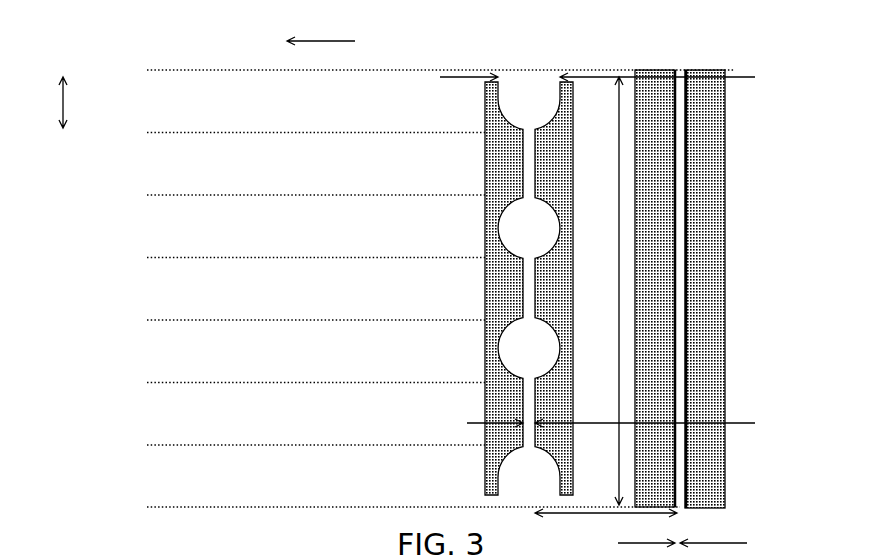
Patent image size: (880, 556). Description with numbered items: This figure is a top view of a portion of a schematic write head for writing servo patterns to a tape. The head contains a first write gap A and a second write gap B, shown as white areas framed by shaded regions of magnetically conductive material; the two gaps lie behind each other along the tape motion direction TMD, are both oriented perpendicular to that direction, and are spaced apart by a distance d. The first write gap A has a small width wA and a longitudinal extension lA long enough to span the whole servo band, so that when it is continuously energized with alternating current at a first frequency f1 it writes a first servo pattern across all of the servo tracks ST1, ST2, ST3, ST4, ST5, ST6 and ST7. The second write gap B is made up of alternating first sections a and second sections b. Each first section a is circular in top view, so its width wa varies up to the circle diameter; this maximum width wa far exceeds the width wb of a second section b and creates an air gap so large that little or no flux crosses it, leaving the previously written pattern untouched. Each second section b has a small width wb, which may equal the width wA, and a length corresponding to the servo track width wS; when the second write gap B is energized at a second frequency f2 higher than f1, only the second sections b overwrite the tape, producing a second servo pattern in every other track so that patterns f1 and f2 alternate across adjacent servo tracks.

The second write gap B is at (529, 265).
The first write gap A is at (680, 271).
The first servo track ST1 is at (441, 101).
The second servo track ST2 is at (316, 171).
The servo track ST3 is at (316, 234).
The servo track ST4 is at (316, 296).
The servo track ST5 is at (316, 359).
The servo track ST6 is at (316, 421).
The servo track ST7 is at (413, 483).
The first frequency f1 is at (313, 290).
The second frequency f2 is at (313, 290).
The first section a is at (525, 477).
The second section b is at (530, 417).
The width of the first section wa is at (622, 78).
The width of the second section wb is at (636, 423).
The width of the first write gap wA is at (711, 541).
The servo track width wS is at (87, 102).
The distance d is at (606, 532).
The longitudinal extension of the first write gap lA is at (600, 291).
The tape motion direction TMD is at (325, 22).